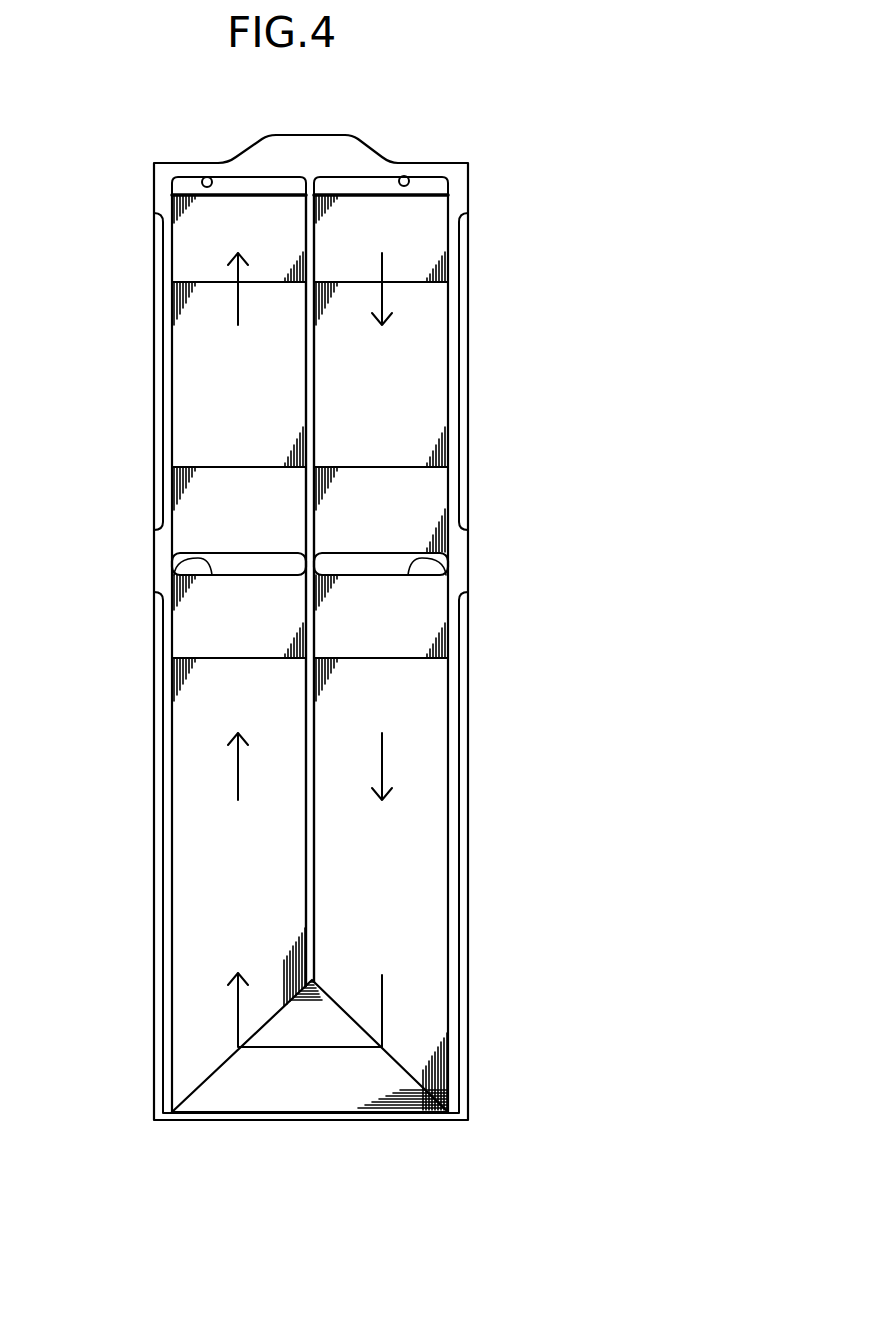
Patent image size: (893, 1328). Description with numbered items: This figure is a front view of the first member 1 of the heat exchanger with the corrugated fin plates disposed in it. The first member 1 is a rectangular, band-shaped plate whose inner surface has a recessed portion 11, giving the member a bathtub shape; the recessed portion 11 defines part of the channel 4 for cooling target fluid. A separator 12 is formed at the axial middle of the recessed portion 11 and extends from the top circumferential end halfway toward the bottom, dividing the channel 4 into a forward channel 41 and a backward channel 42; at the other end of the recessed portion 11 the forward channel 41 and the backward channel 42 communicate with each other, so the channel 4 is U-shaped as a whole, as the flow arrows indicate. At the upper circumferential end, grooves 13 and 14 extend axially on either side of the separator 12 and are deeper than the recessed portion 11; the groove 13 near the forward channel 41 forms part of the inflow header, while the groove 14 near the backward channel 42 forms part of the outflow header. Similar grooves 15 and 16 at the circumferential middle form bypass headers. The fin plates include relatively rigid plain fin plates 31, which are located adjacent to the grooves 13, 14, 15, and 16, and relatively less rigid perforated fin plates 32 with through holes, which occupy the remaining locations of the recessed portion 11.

The first member 1 is at (442, 162).
The channel for cooling target fluid 4 is at (309, 644).
The recessed portion 11 is at (218, 1112).
The separator 12 is at (318, 868).
The groove 13 is at (399, 176).
The groove 14 is at (203, 177).
The groove 15 is at (425, 560).
The groove 16 is at (190, 560).
The plain fin plate 31 is at (178, 200).
The perforated fin plate 32 is at (180, 296).
The forward channel 41 is at (413, 386).
The backward channel 42 is at (211, 386).